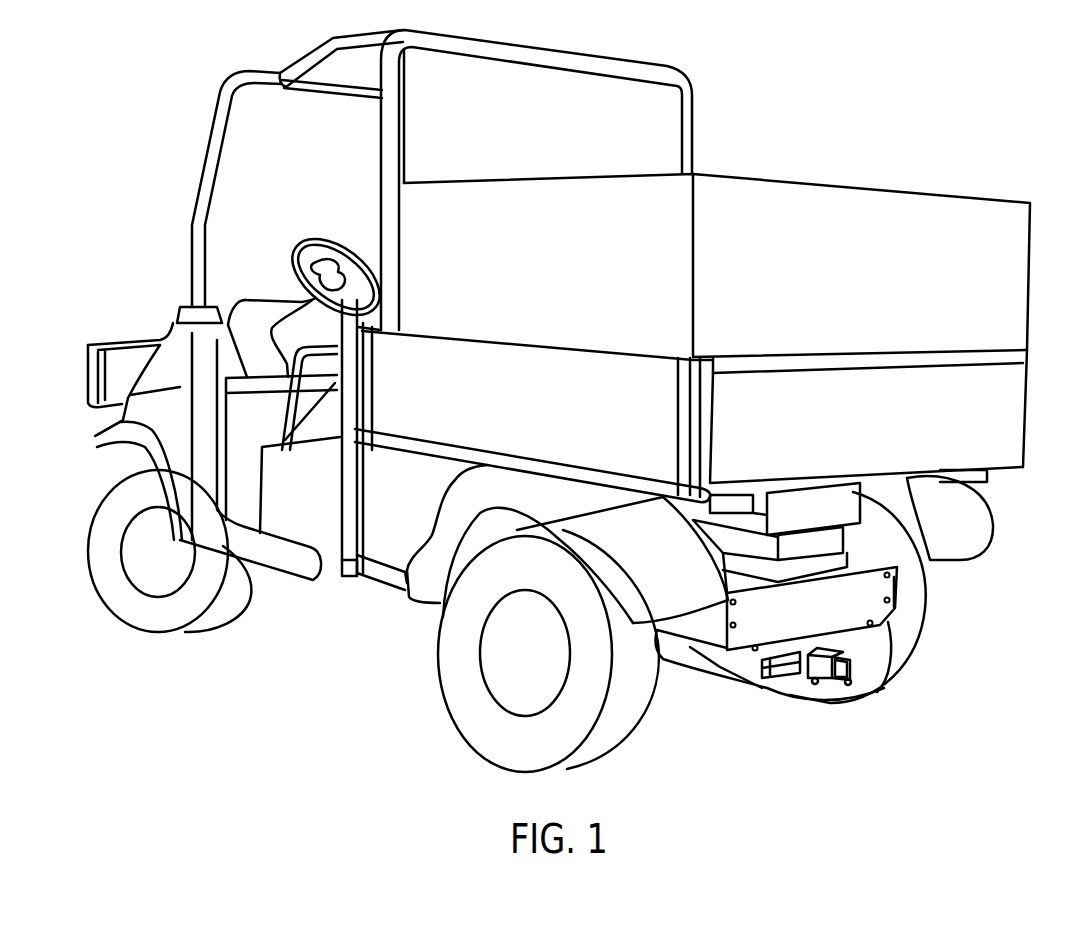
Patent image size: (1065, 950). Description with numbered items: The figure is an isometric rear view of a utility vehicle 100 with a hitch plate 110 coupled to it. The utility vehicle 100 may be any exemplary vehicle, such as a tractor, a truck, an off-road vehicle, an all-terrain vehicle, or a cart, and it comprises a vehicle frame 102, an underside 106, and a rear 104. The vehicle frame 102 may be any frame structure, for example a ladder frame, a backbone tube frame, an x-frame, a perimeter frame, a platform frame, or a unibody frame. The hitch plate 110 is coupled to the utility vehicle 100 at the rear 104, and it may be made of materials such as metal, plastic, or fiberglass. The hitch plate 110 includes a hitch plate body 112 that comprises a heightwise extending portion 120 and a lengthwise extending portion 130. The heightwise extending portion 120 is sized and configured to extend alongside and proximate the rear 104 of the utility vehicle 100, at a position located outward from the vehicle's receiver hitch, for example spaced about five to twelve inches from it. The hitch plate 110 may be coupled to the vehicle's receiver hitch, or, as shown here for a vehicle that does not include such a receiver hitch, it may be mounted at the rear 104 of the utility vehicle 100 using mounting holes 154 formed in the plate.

The utility vehicle 100 is at (862, 135).
The vehicle frame 102 is at (350, 582).
The rear 104 is at (934, 652).
The underside 106 is at (381, 594).
The hitch plate 110 is at (744, 697).
The hitch plate body 112 is at (898, 613).
The heightwise extending portion 120 is at (866, 585).
The lengthwise extending portion 130 is at (767, 680).
The mounting holes 154 is at (892, 576).